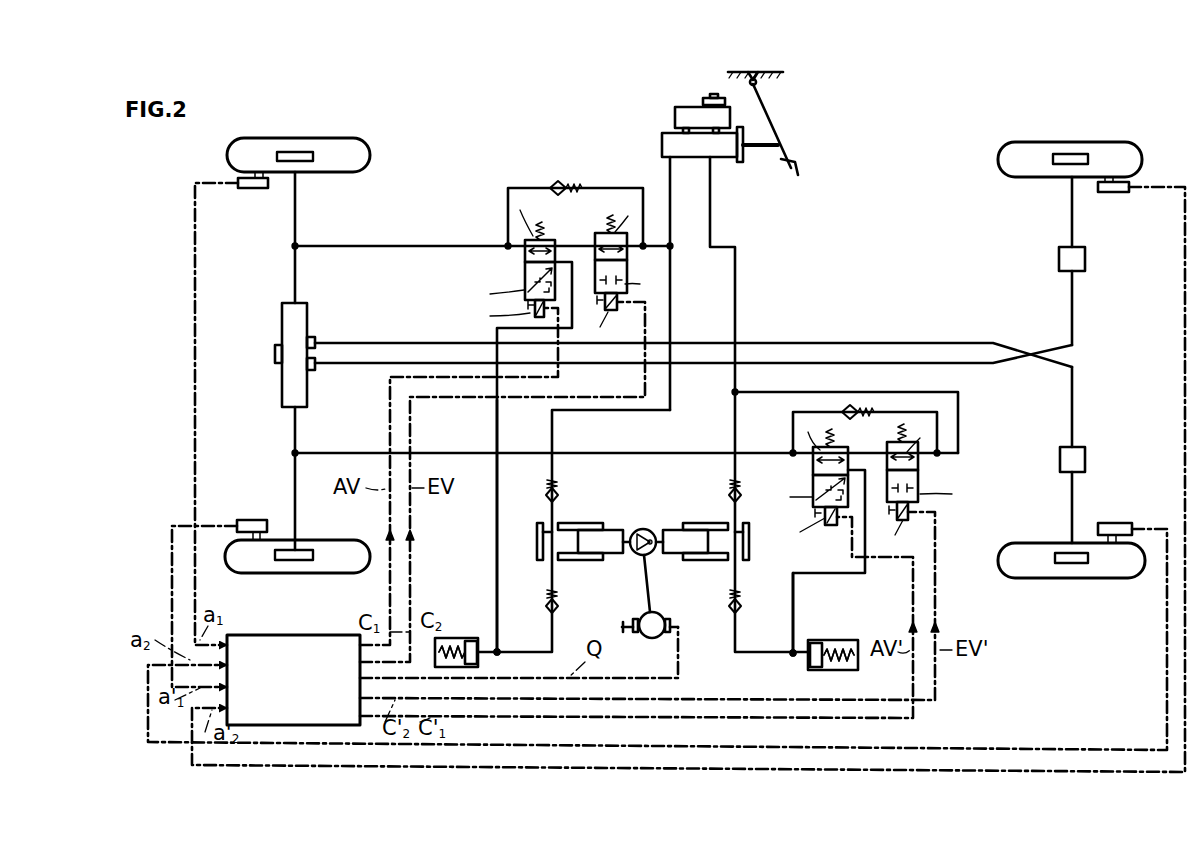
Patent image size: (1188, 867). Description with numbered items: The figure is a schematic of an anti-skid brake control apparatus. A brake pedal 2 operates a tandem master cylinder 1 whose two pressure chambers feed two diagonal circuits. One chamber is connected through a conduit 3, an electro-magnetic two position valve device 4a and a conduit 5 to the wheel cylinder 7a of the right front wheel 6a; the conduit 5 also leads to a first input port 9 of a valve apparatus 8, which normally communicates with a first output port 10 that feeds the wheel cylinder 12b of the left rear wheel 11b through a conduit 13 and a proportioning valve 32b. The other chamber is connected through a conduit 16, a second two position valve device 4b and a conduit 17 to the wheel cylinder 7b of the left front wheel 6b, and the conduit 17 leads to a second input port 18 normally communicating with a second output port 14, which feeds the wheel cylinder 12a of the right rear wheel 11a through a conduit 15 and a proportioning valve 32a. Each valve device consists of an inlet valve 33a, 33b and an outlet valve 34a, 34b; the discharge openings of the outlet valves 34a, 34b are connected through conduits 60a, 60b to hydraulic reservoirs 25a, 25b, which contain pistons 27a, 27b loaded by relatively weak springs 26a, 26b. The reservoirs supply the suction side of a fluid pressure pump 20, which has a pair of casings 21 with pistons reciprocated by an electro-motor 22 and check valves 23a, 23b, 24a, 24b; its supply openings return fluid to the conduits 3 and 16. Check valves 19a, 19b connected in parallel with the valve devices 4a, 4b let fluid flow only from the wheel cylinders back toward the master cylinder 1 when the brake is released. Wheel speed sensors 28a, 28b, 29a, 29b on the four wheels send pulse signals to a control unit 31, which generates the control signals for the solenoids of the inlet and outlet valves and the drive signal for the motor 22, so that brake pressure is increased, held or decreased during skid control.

The tandem master cylinder 1 is at (652, 126).
The brake pedal 2 is at (780, 152).
The conduit 3 is at (668, 176).
The electro-magnetic two position valve device 4a is at (590, 399).
The electro-magnetic two position valve device 4b is at (871, 513).
The conduit 5 is at (430, 244).
The right front wheel 6a is at (350, 150).
The left front wheel 6b is at (350, 565).
The wheel cylinder 7a is at (298, 152).
The wheel cylinder 7b is at (294, 562).
The valve apparatus 8 is at (280, 334).
The first input port 9 is at (292, 294).
The first output port 10 is at (318, 343).
The right rear wheel 11a is at (1020, 150).
The left rear wheel 11b is at (1020, 570).
The wheel cylinder 12a is at (1068, 154).
The wheel cylinder 12b is at (1070, 565).
The conduit 13 is at (818, 343).
The second output port 14 is at (318, 366).
The conduit 15 is at (955, 368).
The conduit 16 is at (712, 212).
The conduit 17 is at (650, 453).
The second input port 18 is at (291, 410).
The check valve 19a is at (572, 186).
The check valve 19b is at (848, 408).
The fluid pressure pump 20 is at (641, 527).
The casings 21 is at (590, 560).
The electro-motor 22 is at (648, 637).
The check valve 23a is at (727, 488).
The check valve 23b is at (560, 488).
The check valve 24a is at (728, 597).
The check valve 24b is at (560, 600).
The hydraulic reservoir 25a is at (455, 636).
The hydraulic reservoir 25b is at (828, 638).
The spring 26a is at (437, 660).
The spring 26b is at (832, 664).
The piston 27a is at (500, 654).
The piston 27b is at (806, 660).
The wheel speed sensor 28a is at (265, 190).
The wheel speed sensor 28b is at (255, 518).
The wheel speed sensor 29a is at (1110, 194).
The wheel speed sensor 29b is at (1114, 522).
The control unit 31 is at (290, 634).
The proportioning valve 32a is at (1086, 262).
The proportioning valve 32b is at (1086, 458).
The inlet valve 33a is at (628, 262).
The inlet valve 33b is at (920, 470).
The outlet valve 34a is at (523, 258).
The outlet valve 34b is at (811, 466).
The conduit 60a is at (495, 555).
The conduit 60b is at (840, 574).